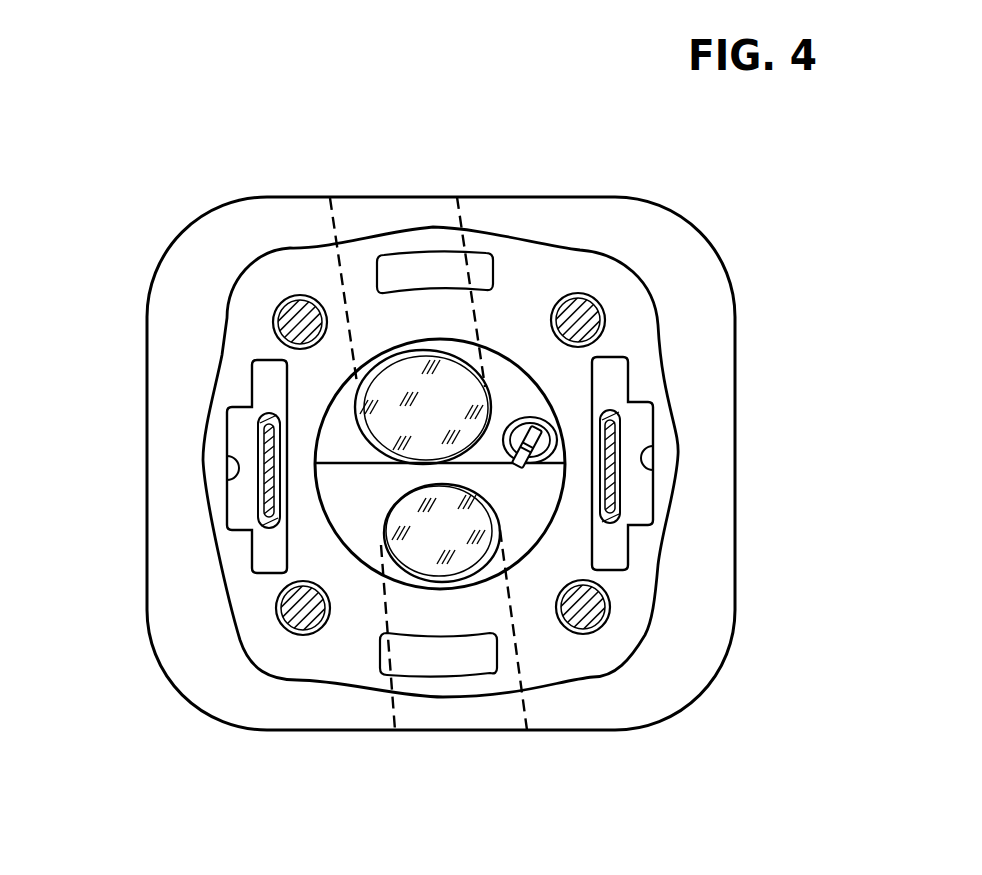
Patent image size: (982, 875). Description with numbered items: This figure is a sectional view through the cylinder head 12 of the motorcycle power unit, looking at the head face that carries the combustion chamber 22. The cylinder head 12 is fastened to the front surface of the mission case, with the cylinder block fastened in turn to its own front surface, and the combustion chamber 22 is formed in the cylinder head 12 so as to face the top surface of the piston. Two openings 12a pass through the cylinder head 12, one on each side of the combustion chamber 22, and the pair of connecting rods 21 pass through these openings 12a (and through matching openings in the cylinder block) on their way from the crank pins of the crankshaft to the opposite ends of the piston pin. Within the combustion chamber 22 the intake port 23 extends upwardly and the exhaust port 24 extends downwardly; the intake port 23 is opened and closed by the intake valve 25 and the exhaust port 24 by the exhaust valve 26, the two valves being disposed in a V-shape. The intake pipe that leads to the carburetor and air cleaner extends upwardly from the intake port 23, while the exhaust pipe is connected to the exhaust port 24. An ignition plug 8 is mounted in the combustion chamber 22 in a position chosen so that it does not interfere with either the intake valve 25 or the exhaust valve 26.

The cylinder head 12 is at (705, 232).
The openings 12a is at (232, 468).
The connecting rods 21 is at (262, 518).
The combustion chamber 22 is at (378, 516).
The intake port 23 is at (337, 250).
The exhaust port 24 is at (395, 707).
The intake valve 25 is at (450, 383).
The exhaust valve 26 is at (460, 533).
The ignition plug 8 is at (528, 420).